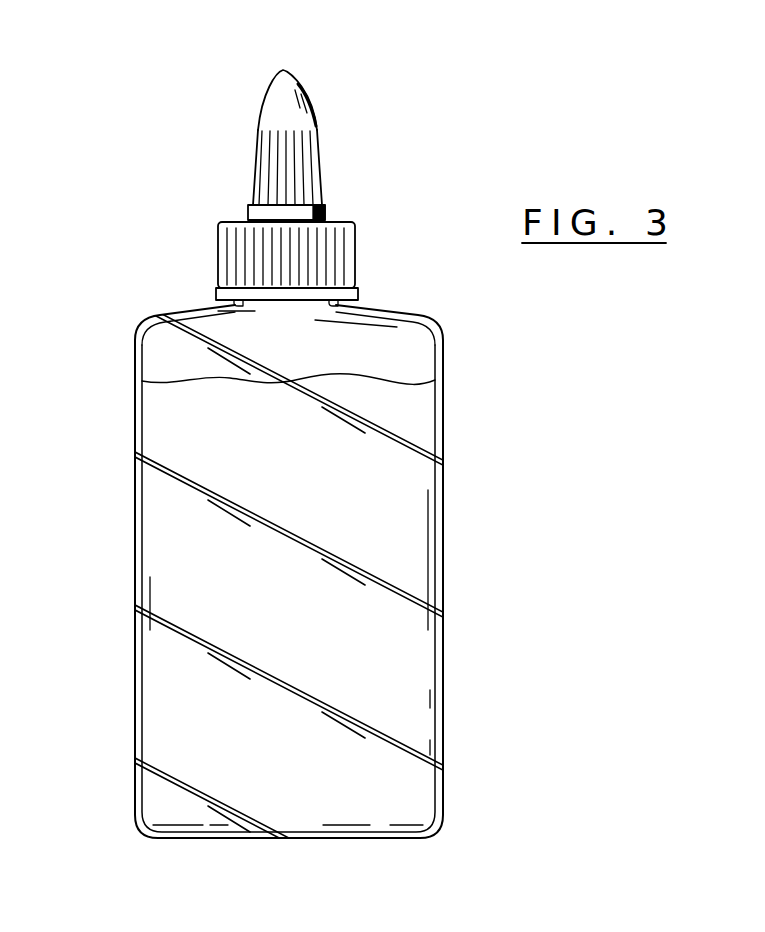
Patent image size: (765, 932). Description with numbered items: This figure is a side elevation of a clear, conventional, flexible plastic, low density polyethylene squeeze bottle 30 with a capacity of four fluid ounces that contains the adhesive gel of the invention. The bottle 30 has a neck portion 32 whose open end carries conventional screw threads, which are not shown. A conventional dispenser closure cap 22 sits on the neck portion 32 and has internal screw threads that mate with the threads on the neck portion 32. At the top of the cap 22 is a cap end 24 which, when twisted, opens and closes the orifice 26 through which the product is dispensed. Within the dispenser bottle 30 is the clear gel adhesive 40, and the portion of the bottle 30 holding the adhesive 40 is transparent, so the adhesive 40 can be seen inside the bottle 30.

The orifice 26 is at (283, 70).
The cap end 24 is at (322, 168).
The dispenser closure cap 22 is at (357, 258).
The neck portion 32 is at (220, 304).
The squeeze bottle 30 is at (445, 466).
The clear gel adhesive 40 is at (173, 567).